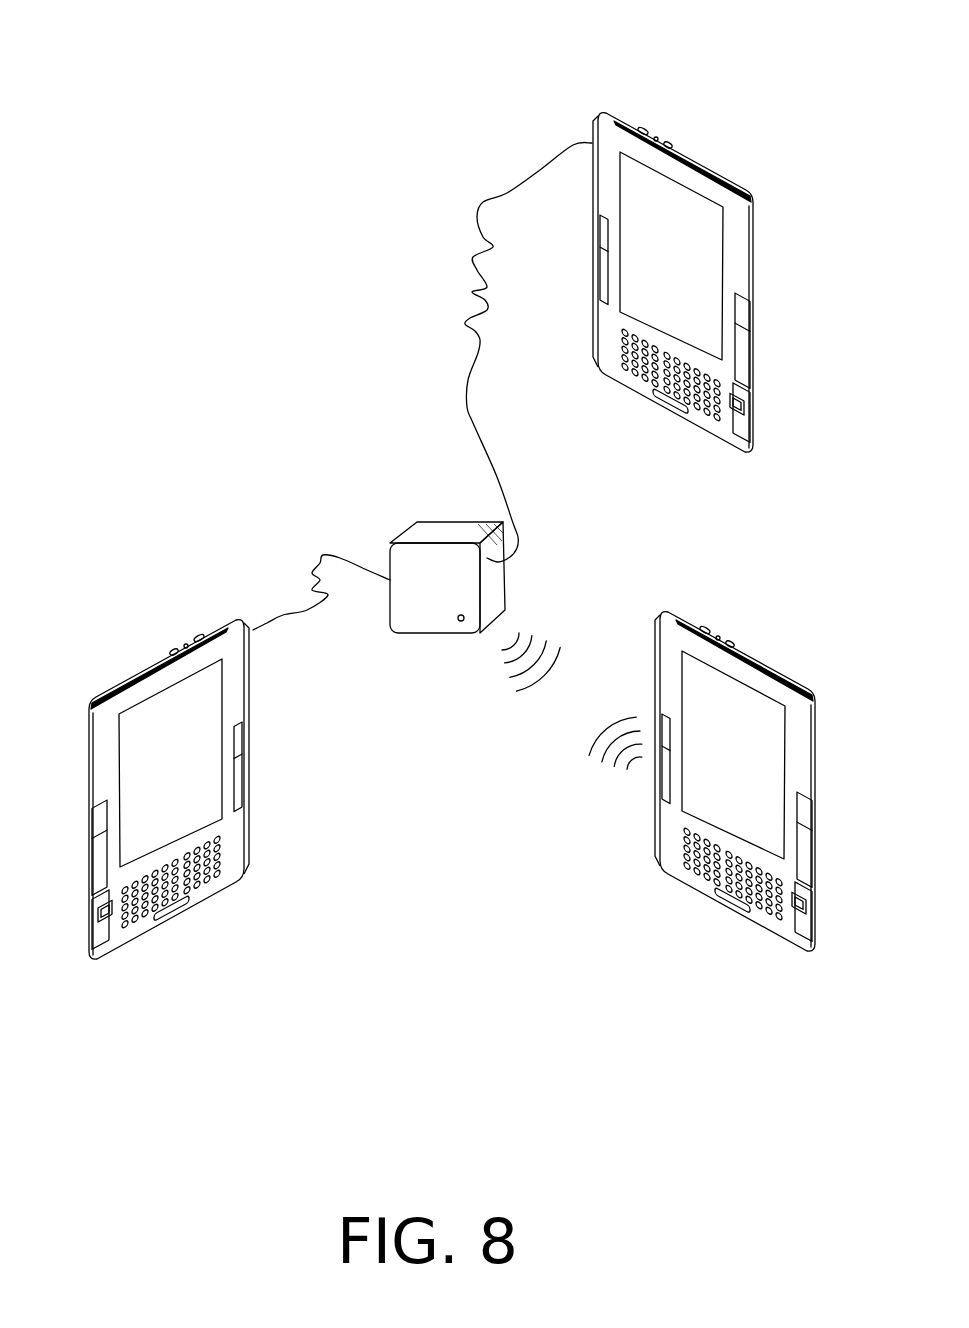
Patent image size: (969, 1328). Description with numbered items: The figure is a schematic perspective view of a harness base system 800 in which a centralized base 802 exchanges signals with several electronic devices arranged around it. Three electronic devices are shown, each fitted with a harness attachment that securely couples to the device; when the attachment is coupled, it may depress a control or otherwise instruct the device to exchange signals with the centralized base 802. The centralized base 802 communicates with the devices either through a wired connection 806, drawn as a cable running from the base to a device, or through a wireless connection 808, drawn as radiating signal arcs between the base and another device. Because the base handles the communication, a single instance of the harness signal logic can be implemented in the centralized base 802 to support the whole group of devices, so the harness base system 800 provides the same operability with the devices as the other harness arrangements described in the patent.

The harness base system 800 is at (210, 57).
The centralized base 802 is at (381, 515).
The wired connection 806 is at (467, 407).
The wireless connection 808 is at (526, 781).